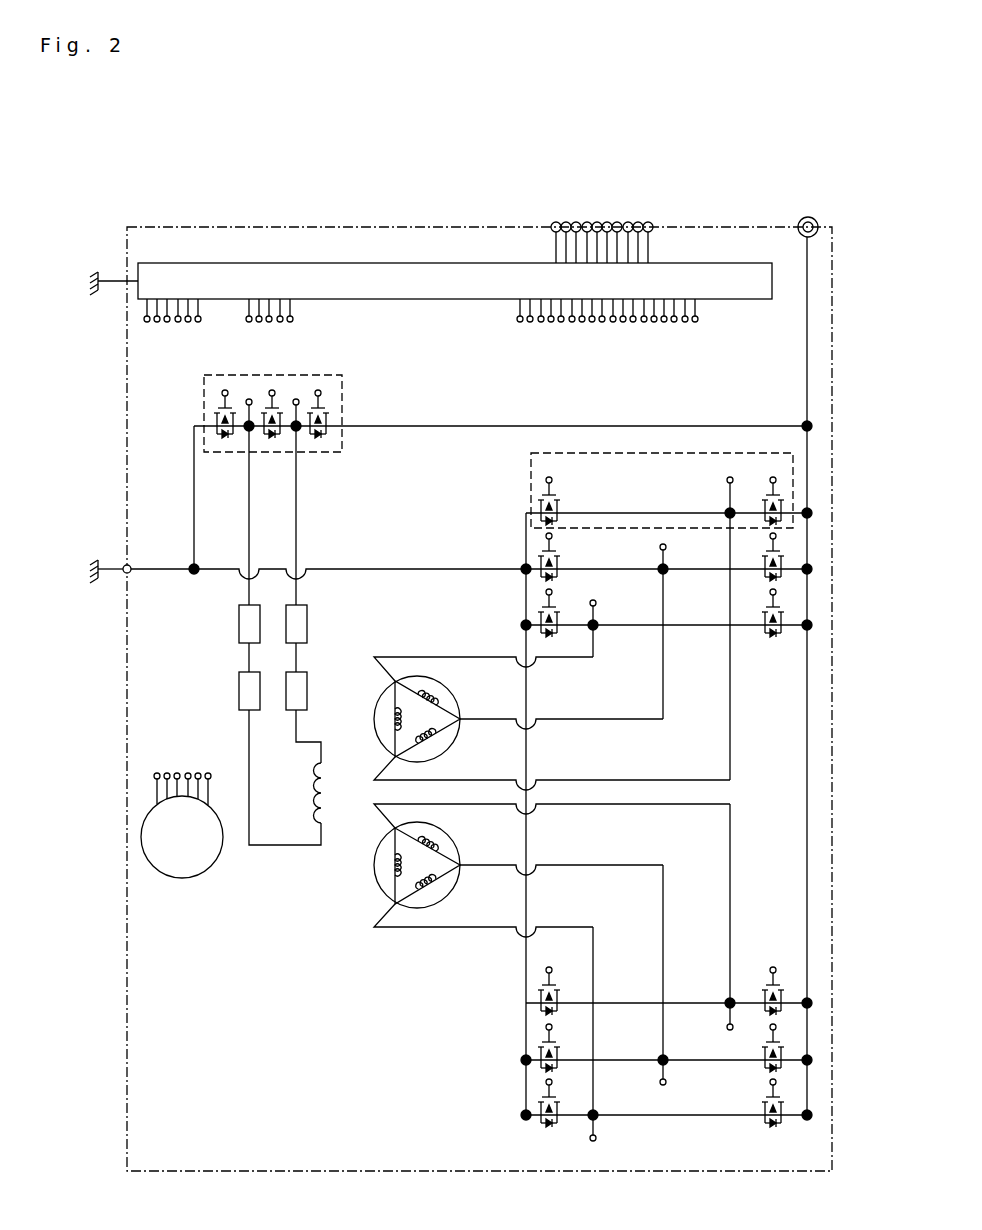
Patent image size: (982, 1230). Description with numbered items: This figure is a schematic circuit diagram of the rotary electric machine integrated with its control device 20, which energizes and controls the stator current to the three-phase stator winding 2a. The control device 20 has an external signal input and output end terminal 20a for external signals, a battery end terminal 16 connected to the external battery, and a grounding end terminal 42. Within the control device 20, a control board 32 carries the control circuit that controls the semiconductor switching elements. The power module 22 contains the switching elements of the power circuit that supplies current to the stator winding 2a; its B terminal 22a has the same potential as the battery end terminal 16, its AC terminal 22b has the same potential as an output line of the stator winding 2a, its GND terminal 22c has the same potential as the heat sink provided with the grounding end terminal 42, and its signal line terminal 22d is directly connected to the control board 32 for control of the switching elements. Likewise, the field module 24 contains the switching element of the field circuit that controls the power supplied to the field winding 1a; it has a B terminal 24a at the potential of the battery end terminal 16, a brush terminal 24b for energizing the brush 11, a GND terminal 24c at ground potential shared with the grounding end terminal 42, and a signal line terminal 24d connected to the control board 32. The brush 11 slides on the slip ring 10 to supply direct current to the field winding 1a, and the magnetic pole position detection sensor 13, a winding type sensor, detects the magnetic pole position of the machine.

The control device 20 is at (205, 227).
The external signal input and output end terminal 20a is at (575, 224).
The battery end terminal 16 is at (801, 220).
The control board 32 is at (365, 278).
The field module 24 is at (343, 401).
The B terminal 24a is at (399, 426).
The brush terminal 24b is at (250, 545).
The GND terminal 24c is at (191, 567).
The signal line terminal 24d is at (251, 400).
The power module 22 is at (566, 453).
The B terminal 22a is at (812, 513).
The AC terminal 22b is at (597, 780).
The GND terminal 22c is at (524, 566).
The signal line terminal 22d is at (729, 478).
The stator winding 2a is at (427, 683).
The field winding 1a is at (318, 815).
The slip ring 10 is at (239, 698).
The brush 11 is at (239, 629).
The magnetic pole position detection sensor 13 is at (180, 866).
The grounding end terminal 42 is at (126, 573).